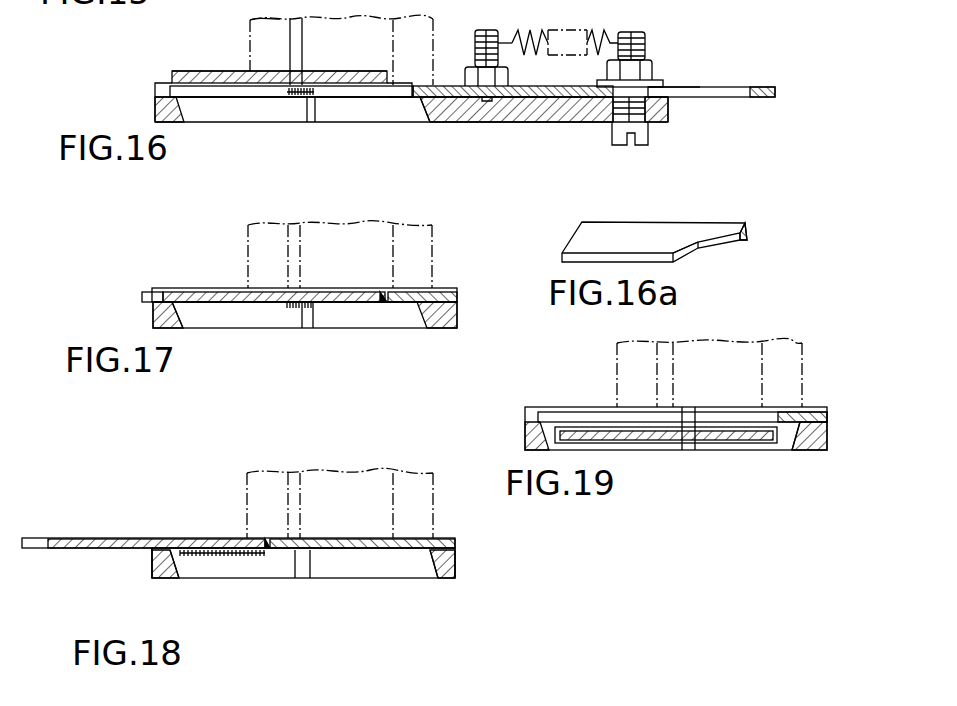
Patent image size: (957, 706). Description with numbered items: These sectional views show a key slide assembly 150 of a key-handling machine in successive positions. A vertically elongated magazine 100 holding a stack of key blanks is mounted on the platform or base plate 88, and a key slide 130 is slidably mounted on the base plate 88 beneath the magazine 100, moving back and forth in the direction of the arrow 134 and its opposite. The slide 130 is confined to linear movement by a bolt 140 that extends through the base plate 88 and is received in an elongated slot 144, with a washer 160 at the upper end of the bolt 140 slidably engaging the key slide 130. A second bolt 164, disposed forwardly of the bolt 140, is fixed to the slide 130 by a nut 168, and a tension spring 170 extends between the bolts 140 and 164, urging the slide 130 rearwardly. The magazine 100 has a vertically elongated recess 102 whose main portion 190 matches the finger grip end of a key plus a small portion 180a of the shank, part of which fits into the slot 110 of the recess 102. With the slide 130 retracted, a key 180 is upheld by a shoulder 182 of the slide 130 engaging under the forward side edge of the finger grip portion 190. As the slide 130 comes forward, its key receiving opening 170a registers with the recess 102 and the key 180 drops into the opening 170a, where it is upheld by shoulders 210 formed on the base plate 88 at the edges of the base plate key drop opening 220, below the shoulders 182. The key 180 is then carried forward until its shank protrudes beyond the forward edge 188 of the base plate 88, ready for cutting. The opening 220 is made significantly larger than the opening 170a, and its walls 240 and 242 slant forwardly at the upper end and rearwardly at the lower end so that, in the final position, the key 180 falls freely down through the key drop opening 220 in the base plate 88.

In FIG. 16, the base plate 88 is at (568, 118).
In FIG. 17, the base plate 88 is at (458, 315).
In FIG. 19, the base plate 88 is at (676, 436).
In FIG. 18, the base plate 88 is at (170, 575).
In FIG. 16, the magazine 100 is at (432, 38).
In FIG. 17, the magazine 100 is at (431, 242).
In FIG. 19, the magazine 100 is at (802, 352).
In FIG. 18, the magazine 100 is at (420, 490).
In FIG. 16, the vertically elongated recess 102 is at (388, 45).
In FIG. 16, the slot 110 is at (250, 22).
In FIG. 16, the key slide 130 is at (762, 86).
In FIG. 16A, the key slide 130 is at (641, 233).
In FIG. 17, the key slide 130 is at (446, 288).
In FIG. 19, the key slide 130 is at (828, 432).
In FIG. 18, the key slide 130 is at (440, 538).
In FIG. 16, the arrow 134 is at (308, 42).
In FIG. 16, the bolt 140 is at (665, 124).
In FIG. 16, the elongated slot 144 is at (726, 98).
In FIG. 16, the key slide assembly 150 is at (674, 84).
In FIG. 16, the washer 160 is at (655, 82).
In FIG. 16, the bolt 164 is at (487, 30).
In FIG. 16, the nut 168 is at (500, 73).
In FIG. 16, the spring 170 is at (540, 32).
In FIG. 16, the key receiving opening 170a is at (380, 96).
In FIG. 17, the key receiving opening 170a is at (363, 306).
In FIG. 16, the key 180 is at (172, 76).
In FIG. 17, the key 180 is at (311, 300).
In FIG. 19, the key 180 is at (615, 432).
In FIG. 18, the key 180 is at (130, 540).
In FIG. 16, the small portion of the shank of the key 180a is at (232, 72).
In FIG. 16, the shoulder 182 is at (305, 96).
In FIG. 16A, the shoulder 182 is at (684, 256).
In FIG. 16, the forward edge 188 is at (155, 105).
In FIG. 18, the forward edge 188 is at (152, 562).
In FIG. 16, the main portion / finger grip portion 190 is at (380, 62).
In FIG. 16, the shoulder 210 is at (310, 100).
In FIG. 17, the shoulder 210 is at (306, 308).
In FIG. 16, the base plate key drop opening 220 is at (430, 100).
In FIG. 17, the base plate key drop opening 220 is at (176, 305).
In FIG. 19, the base plate key drop opening 220 is at (790, 440).
In FIG. 18, the base plate key drop opening 220 is at (421, 573).
In FIG. 18, the wall slanting forwardly at an upper end 240 is at (168, 560).
In FIG. 18, the wall slanting rearwardly at a lower end 242 is at (420, 557).